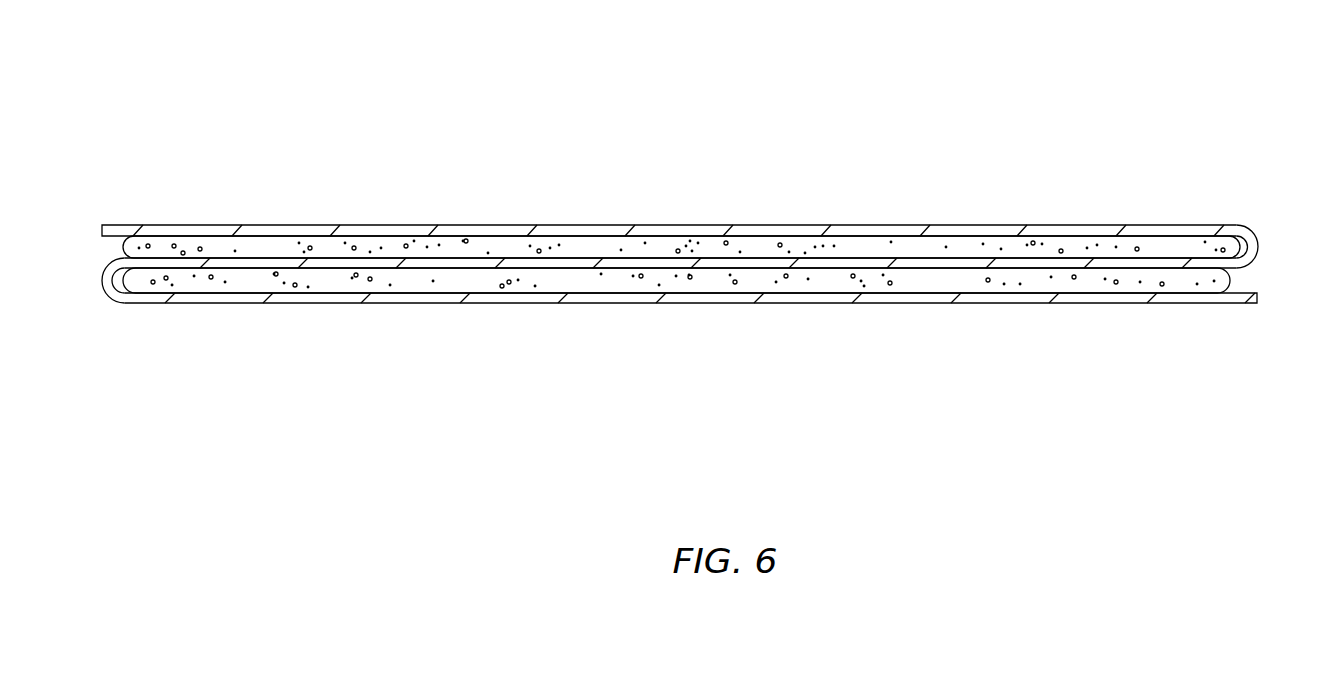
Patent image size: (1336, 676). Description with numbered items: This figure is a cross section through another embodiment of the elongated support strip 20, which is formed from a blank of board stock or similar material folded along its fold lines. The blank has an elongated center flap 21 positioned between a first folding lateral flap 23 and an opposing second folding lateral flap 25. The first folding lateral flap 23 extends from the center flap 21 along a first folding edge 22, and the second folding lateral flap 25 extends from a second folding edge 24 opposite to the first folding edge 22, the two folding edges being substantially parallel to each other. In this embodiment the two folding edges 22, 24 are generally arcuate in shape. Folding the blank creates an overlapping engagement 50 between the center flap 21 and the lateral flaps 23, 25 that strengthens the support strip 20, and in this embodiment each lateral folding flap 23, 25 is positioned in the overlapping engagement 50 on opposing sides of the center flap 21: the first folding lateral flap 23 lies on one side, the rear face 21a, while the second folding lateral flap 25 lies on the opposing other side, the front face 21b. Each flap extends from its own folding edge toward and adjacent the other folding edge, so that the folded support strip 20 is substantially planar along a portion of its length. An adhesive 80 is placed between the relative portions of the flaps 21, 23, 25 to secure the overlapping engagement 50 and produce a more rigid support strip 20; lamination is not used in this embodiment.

The support strip 20 is at (378, 118).
The center flap 21 is at (1207, 263).
The rear face 21a is at (707, 240).
The front face 21b is at (727, 286).
The first folding edge 22 is at (1253, 203).
The first folding lateral flap 23 is at (1069, 233).
The second folding edge 24 is at (104, 324).
The second folding lateral flap 25 is at (1162, 298).
The overlapping engagement 50 is at (1275, 218).
The adhesive 80 is at (177, 247).